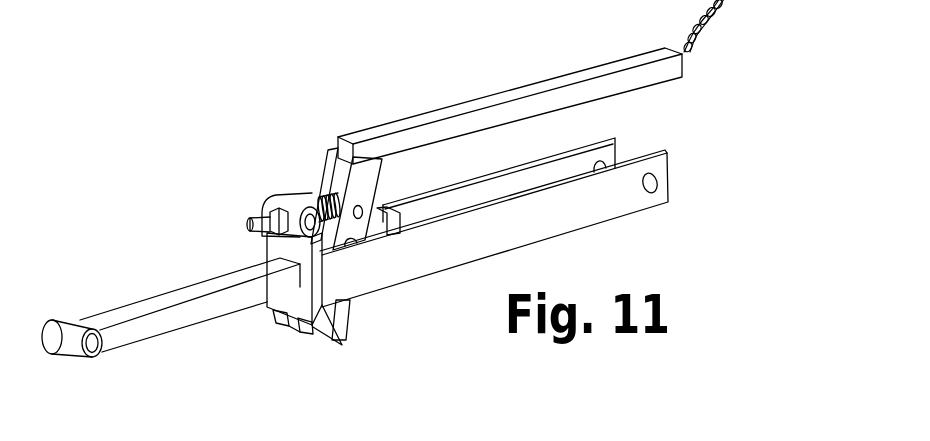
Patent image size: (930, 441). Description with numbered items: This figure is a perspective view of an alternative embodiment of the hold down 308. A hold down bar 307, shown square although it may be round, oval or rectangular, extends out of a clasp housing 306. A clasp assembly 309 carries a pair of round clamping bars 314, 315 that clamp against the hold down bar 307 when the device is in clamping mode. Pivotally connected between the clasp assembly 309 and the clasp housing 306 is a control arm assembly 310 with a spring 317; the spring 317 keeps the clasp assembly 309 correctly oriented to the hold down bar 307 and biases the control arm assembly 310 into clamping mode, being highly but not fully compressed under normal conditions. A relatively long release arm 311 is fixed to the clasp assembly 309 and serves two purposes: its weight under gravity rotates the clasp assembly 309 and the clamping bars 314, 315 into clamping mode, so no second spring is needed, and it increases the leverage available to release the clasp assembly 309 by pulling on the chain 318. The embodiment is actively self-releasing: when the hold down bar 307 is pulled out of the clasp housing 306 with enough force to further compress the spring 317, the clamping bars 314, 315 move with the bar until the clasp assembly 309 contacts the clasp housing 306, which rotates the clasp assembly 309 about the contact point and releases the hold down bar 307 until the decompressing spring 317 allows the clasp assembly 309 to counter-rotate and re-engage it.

The clasp housing 306 is at (503, 188).
The hold down bar 307 is at (146, 317).
The hold down 308 is at (248, 90).
The clasp assembly 309 is at (390, 182).
The control arm assembly 310 is at (278, 188).
The release arm 311 is at (478, 102).
The round clamping bar 314 is at (343, 305).
The round clamping bar 315 is at (360, 237).
The spring 317 is at (322, 193).
The chain 318 is at (762, 0).